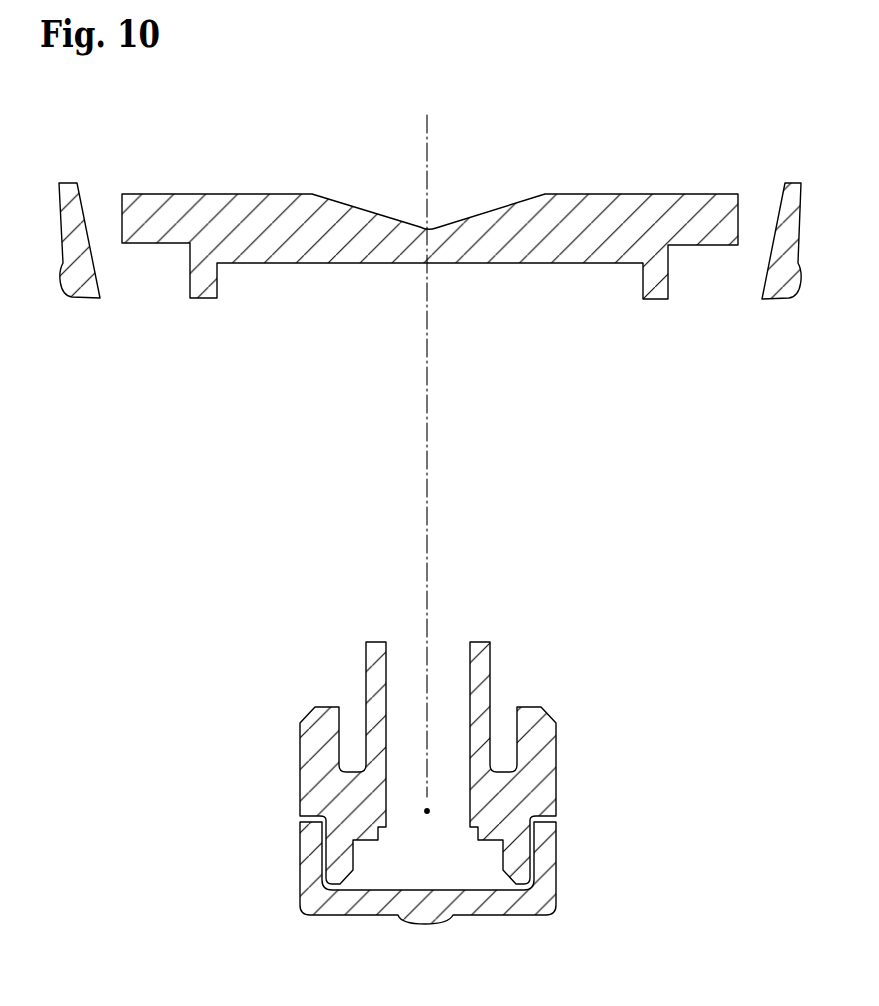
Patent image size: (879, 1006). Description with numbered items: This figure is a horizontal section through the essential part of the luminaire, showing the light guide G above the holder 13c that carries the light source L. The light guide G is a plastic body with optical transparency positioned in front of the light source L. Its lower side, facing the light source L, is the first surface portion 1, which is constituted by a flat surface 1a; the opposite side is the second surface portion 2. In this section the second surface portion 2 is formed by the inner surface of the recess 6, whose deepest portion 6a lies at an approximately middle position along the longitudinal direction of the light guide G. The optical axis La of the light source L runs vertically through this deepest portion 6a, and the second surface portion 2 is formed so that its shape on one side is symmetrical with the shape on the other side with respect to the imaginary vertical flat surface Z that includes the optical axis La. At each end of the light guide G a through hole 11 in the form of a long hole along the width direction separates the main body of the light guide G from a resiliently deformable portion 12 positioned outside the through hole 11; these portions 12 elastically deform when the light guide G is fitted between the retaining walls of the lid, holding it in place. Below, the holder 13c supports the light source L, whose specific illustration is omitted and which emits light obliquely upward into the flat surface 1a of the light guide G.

The first surface portion 1 is at (430, 222).
The flat surface 1a is at (430, 222).
The second surface portion 2 is at (430, 222).
The recess 6 is at (430, 222).
The deepest portion 6a is at (470, 263).
The through hole 11 is at (107, 210).
The resiliently deformable portion 12 is at (67, 210).
The holder 13c is at (555, 760).
The light guide G is at (638, 150).
The light source L is at (427, 811).
The optical axis La is at (483, 425).
The imaginary vertical flat surface Z is at (430, 172).